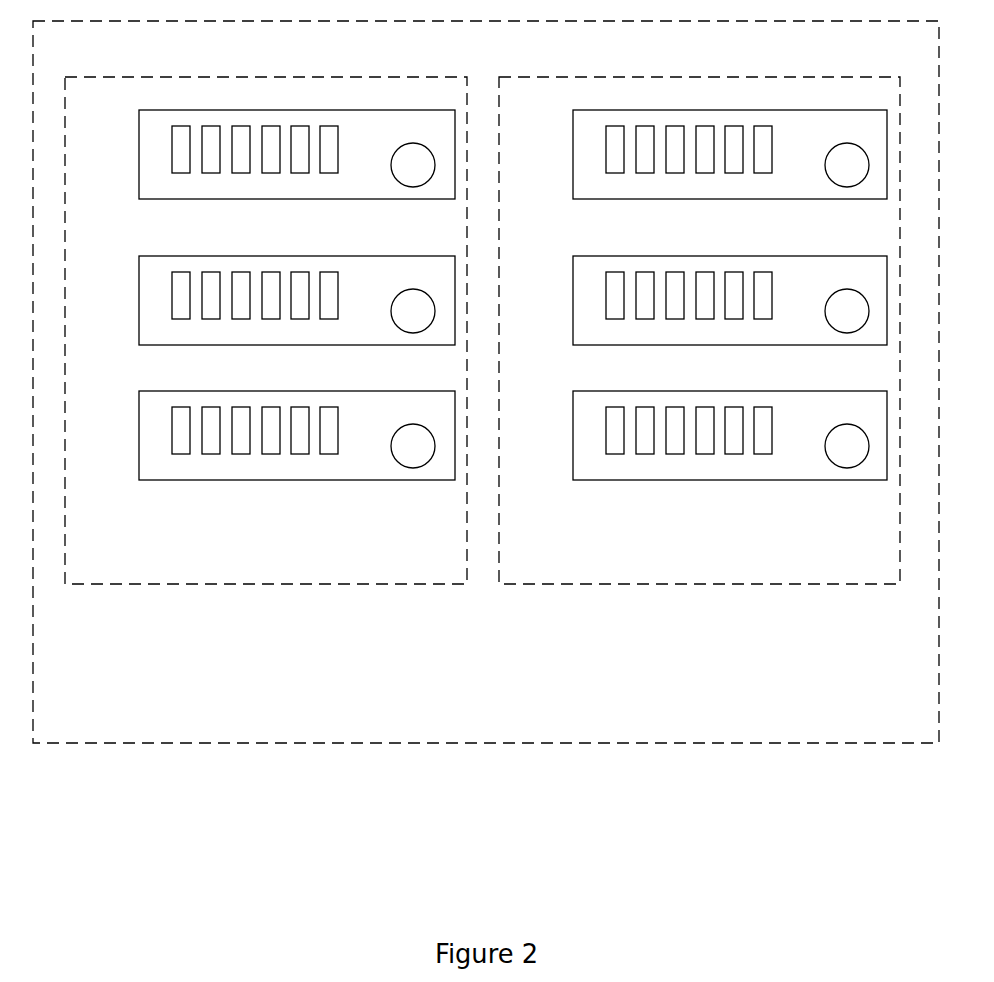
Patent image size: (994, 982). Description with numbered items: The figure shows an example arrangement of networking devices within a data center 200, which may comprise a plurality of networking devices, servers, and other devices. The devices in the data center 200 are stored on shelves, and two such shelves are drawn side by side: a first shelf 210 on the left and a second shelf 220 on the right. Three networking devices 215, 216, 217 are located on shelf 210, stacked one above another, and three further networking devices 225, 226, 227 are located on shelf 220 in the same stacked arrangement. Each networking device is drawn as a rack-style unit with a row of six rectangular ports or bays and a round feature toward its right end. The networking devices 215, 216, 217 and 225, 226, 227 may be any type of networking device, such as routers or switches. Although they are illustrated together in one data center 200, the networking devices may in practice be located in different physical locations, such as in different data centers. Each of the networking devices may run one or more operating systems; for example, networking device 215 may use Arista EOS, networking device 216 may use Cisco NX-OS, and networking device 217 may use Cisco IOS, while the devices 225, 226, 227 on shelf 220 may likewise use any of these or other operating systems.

The data center 200 is at (565, 720).
The shelf 210 is at (318, 566).
The shelf 220 is at (751, 566).
The networking device 215 is at (139, 155).
The networking device 216 is at (139, 306).
The networking device 217 is at (139, 446).
The networking device 225 is at (573, 155).
The networking device 226 is at (573, 306).
The networking device 227 is at (573, 446).